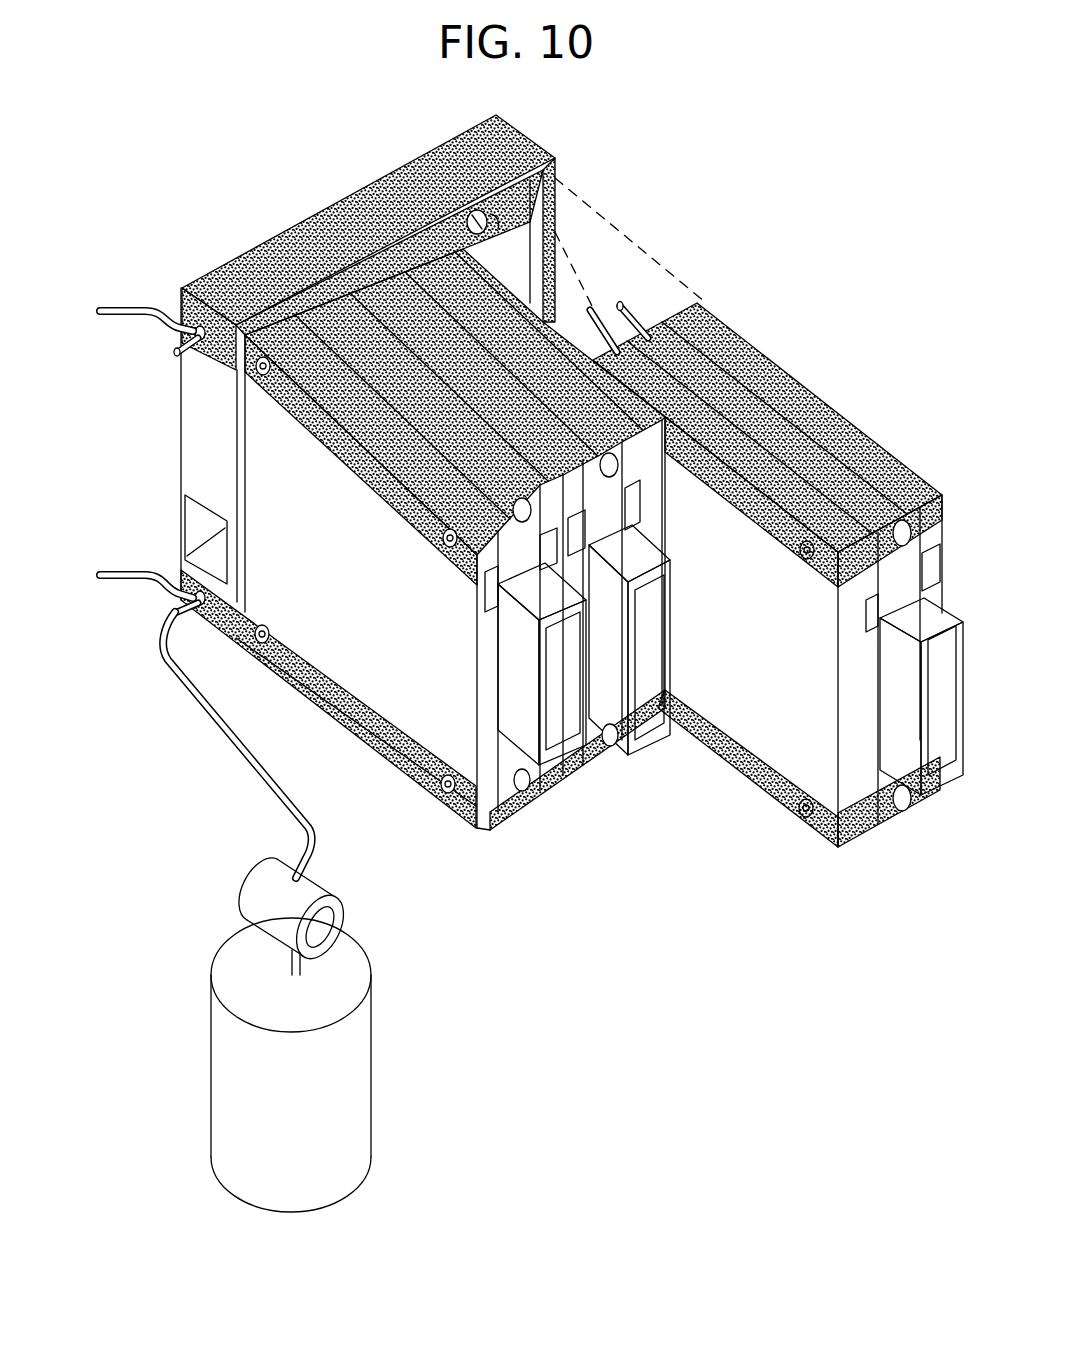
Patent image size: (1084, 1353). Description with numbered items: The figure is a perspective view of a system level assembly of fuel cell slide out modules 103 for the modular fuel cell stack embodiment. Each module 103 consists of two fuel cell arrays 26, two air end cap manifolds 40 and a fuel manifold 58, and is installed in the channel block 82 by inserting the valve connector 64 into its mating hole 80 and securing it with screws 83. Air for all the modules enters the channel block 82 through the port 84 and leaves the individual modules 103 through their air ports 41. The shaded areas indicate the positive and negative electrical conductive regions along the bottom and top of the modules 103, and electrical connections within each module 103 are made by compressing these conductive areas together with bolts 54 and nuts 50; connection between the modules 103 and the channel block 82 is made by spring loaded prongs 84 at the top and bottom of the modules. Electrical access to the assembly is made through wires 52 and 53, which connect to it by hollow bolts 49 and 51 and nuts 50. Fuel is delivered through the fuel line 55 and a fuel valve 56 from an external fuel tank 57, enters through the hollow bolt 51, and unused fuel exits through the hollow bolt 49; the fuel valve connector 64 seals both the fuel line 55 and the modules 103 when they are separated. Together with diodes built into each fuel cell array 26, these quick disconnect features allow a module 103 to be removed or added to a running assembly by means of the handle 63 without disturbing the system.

The fuel cell array 26 is at (885, 828).
The air end cap manifold 40 is at (853, 792).
The air port 41 is at (880, 598).
The hollow bolt 49 is at (176, 352).
The nut 50 is at (205, 326).
The hollow bolt 51 is at (161, 604).
The wire 52 is at (186, 328).
The wire 53 is at (121, 562).
The bolt 54 is at (806, 808).
The fuel line 55 is at (284, 810).
The fuel valve 56 is at (342, 896).
The external fuel tank 57 is at (362, 1100).
The fuel manifold 58 is at (886, 776).
The handle 63 is at (943, 757).
The valve connector 64 is at (596, 311).
The mating hole 80 is at (502, 220).
The channel block 82 is at (182, 400).
The screw 83 is at (895, 528).
The port 84 is at (639, 309).
The fuel cell slide out module 103 is at (760, 853).